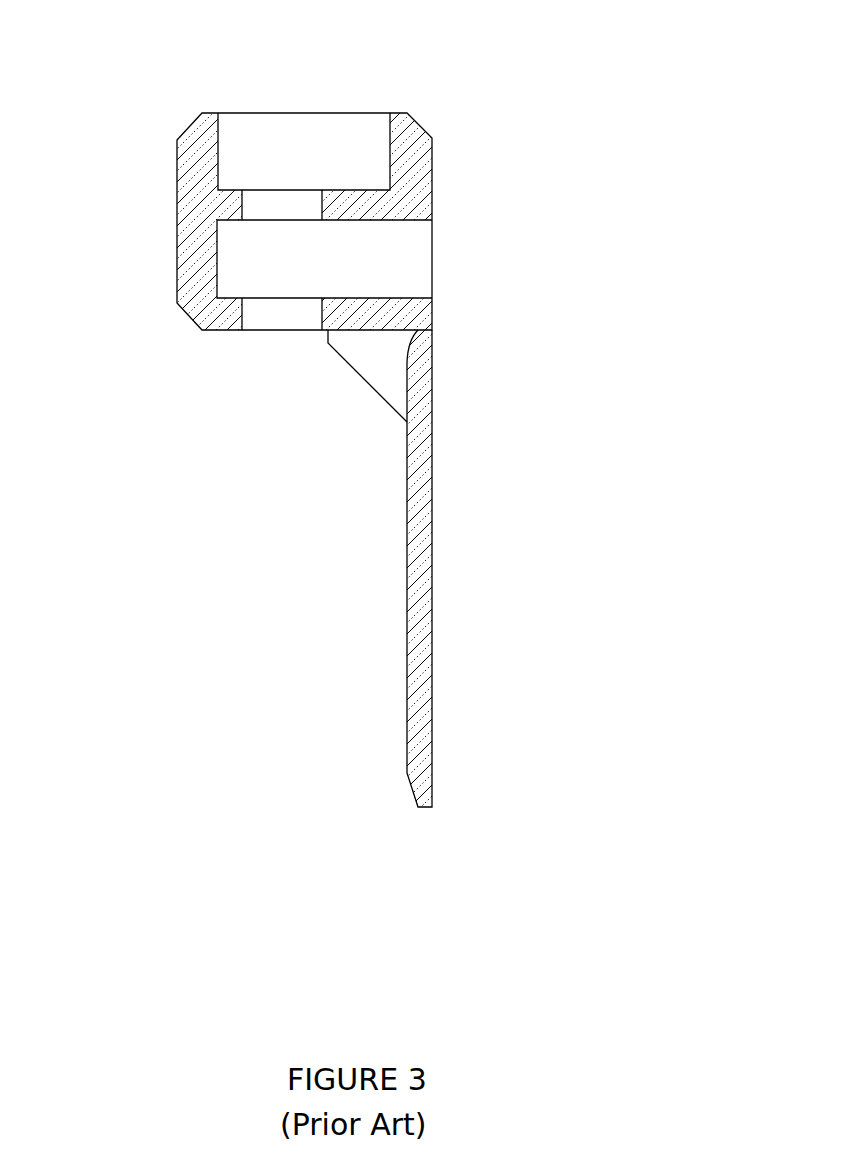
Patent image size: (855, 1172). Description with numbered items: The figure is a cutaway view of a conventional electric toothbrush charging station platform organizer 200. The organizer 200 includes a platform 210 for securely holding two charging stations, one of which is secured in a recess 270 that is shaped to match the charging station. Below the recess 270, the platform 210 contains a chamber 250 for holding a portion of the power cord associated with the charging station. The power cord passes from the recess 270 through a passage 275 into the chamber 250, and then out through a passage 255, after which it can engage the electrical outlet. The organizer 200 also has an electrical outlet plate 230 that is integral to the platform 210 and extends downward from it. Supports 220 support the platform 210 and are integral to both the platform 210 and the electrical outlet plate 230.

The conventional electric toothbrush charging station platform organizer 200 is at (92, 43).
The platform 210 is at (202, 235).
The supports 220 is at (367, 372).
The electrical outlet plate 230 is at (427, 633).
The chamber 250 is at (368, 268).
The passage 255 is at (278, 311).
The recess 270 is at (314, 155).
The passage 275 is at (277, 196).